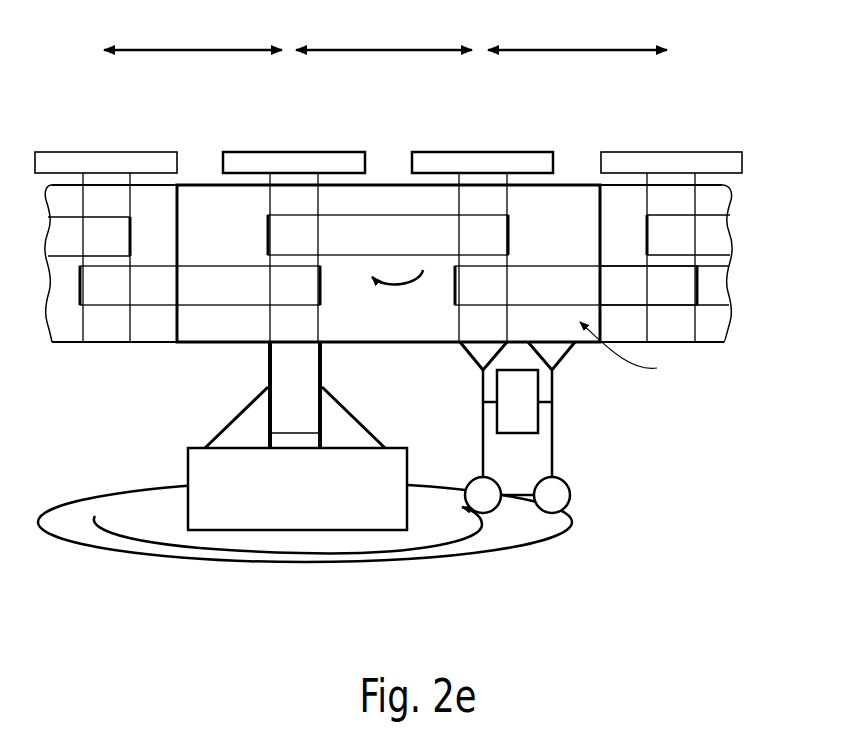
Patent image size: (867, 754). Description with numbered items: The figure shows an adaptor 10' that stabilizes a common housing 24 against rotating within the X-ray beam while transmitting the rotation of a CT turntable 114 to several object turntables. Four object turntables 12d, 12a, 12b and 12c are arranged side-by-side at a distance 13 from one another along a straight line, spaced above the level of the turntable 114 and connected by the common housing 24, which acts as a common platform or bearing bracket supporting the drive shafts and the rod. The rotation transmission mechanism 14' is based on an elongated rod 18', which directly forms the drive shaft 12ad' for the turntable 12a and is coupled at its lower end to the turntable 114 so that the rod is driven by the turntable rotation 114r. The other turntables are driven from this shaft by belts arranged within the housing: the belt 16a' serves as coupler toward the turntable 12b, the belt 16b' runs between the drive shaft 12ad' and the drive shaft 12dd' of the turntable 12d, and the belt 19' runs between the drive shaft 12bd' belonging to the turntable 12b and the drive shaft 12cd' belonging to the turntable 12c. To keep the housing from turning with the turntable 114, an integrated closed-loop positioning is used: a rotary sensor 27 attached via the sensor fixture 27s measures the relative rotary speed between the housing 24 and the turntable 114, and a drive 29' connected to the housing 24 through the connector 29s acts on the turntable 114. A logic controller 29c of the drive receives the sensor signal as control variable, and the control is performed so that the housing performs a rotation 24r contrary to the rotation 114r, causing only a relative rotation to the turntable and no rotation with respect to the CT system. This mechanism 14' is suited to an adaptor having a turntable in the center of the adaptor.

The distance 13 is at (385, 34).
The adaptor 10' is at (388, 211).
The object turntable 12d is at (98, 163).
The object turntable 12a is at (294, 165).
The object turntable 12b is at (483, 163).
The object turntable 12c is at (670, 165).
The common housing 24 is at (197, 330).
The rotation of the housing 24r is at (400, 290).
The elongated drive shaft 12ad' is at (388, 271).
The drive shaft 12dd' is at (187, 340).
The drive shaft 12bd' is at (533, 336).
The drive shaft 12cd' is at (723, 270).
The belt 16b' is at (231, 237).
The belt 16a' is at (536, 206).
The belt 19' is at (559, 255).
The rod 18' is at (295, 395).
The turntable 114 is at (485, 540).
The rotation of the turntable 114r is at (340, 553).
The fixture of the sensor 27s is at (478, 360).
The connector 29s is at (552, 357).
The logic controller 29c is at (540, 413).
The rotary sensor 27 is at (482, 512).
The drive 29' is at (585, 513).
The mechanism 14' is at (639, 354).